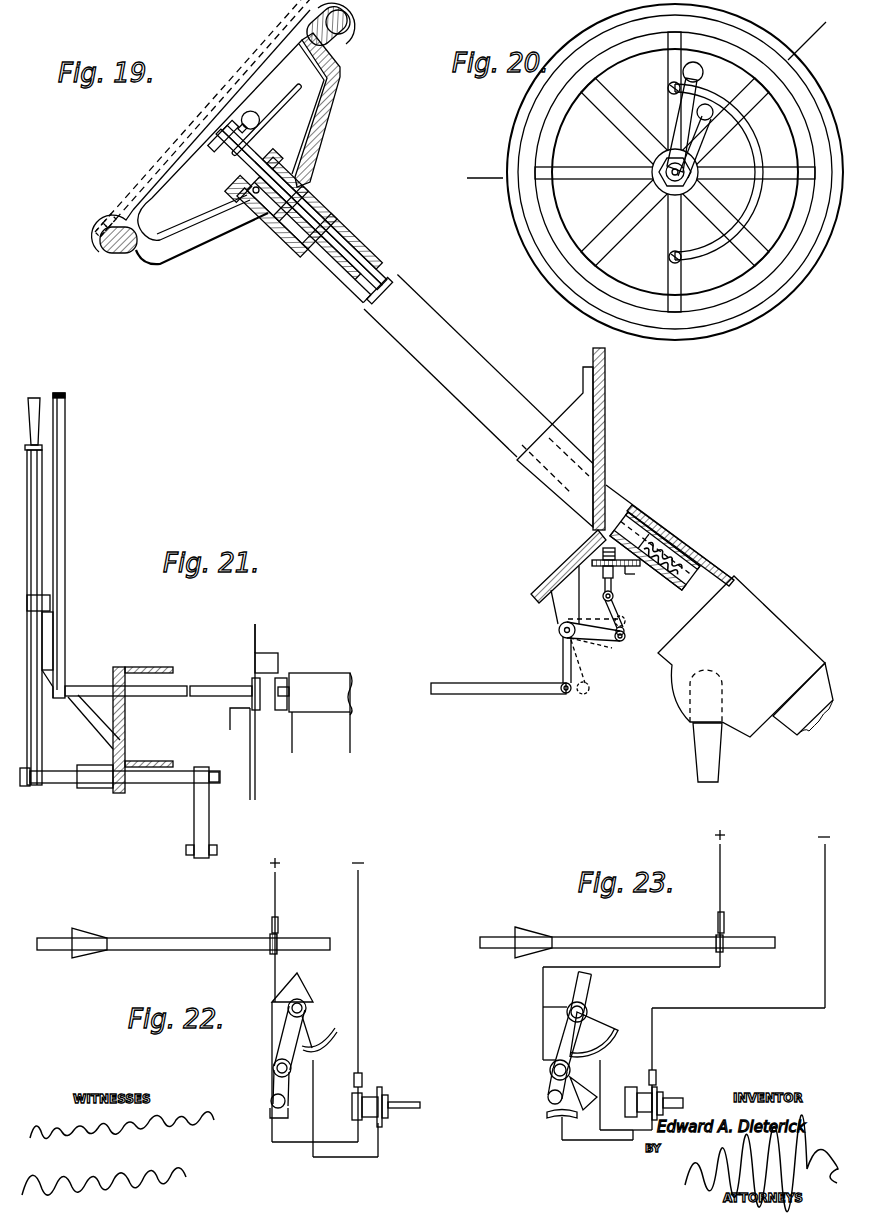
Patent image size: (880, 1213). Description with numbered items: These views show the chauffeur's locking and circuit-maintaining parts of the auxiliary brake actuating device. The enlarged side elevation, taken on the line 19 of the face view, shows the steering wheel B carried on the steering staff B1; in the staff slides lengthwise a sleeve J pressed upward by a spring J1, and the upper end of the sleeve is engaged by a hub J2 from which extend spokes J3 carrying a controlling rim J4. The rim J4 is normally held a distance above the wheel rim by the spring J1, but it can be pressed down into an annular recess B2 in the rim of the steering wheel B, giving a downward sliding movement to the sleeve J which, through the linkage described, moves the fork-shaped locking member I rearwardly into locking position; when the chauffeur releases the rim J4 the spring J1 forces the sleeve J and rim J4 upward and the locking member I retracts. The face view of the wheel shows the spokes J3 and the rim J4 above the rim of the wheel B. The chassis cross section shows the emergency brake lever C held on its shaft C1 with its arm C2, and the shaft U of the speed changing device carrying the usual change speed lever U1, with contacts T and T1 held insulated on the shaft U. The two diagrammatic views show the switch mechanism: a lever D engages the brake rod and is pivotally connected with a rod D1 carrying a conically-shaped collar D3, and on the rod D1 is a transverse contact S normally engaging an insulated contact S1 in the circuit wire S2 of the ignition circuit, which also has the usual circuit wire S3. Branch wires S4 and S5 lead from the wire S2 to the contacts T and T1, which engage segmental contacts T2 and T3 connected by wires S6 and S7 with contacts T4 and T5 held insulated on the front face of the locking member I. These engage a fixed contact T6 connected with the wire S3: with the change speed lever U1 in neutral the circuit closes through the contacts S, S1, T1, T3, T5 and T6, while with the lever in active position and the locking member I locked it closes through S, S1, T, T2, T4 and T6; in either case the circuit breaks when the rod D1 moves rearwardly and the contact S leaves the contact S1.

In FIG. 19, the steering wheel B is at (348, 18).
In FIG. 20, the steering wheel B is at (511, 208).
In FIG. 19, the steering staff B1 is at (478, 366).
In FIG. 19, the annular recess B2 is at (116, 252).
In FIG. 19, the sleeve J is at (652, 528).
In FIG. 20, the sleeve J is at (719, 172).
In FIG. 19, the spring J1 is at (688, 556).
In FIG. 19, the hub J2 is at (245, 190).
In FIG. 19, the spokes J3 is at (190, 232).
In FIG. 20, the spokes J3 is at (668, 67).
In FIG. 19, the rim J4 is at (106, 214).
In FIG. 20, the rim J4 is at (545, 240).
In FIG. 20, the section line 19— 19 is at (642, 96).
In FIG. 21, the emergency brake lever C is at (34, 498).
In FIG. 21, the shaft C1 is at (52, 784).
In FIG. 21, the arm C2 is at (195, 818).
In FIG. 21, the shaft of the speed changing device U is at (208, 690).
In FIG. 22, the shaft of the speed changing device U is at (306, 986).
In FIG. 23, the shaft of the speed changing device U is at (590, 983).
In FIG. 21, the change speed lever U1 is at (66, 596).
In FIG. 23, the lever D is at (642, 938).
In FIG. 22, the rod D1 is at (188, 938).
In FIG. 22, the conically-shaped collar D3 is at (96, 955).
In FIG. 23, the conically-shaped collar D3 is at (540, 935).
In FIG. 22, the contact S is at (268, 933).
In FIG. 23, the contact S is at (714, 928).
In FIG. 22, the contact S1 is at (279, 924).
In FIG. 23, the contact S1 is at (725, 922).
In FIG. 22, the circuit wire S2 is at (273, 886).
In FIG. 23, the circuit wire S2 is at (721, 869).
In FIG. 22, the circuit wire S3 is at (359, 899).
In FIG. 23, the circuit wire S3 is at (824, 898).
In FIG. 22, the branch wire S4 is at (273, 980).
In FIG. 23, the branch wire S4 is at (548, 1007).
In FIG. 22, the branch wire S5 is at (272, 1049).
In FIG. 23, the branch wire S5 is at (543, 1057).
In FIG. 22, the wire S6 is at (314, 1108).
In FIG. 23, the wire S6 is at (626, 1134).
In FIG. 22, the wire S7 is at (300, 1148).
In FIG. 23, the wire S7 is at (585, 1142).
In FIG. 22, the contact T is at (305, 1028).
In FIG. 23, the contact T is at (600, 1055).
In FIG. 19, the contact T1 is at (498, 688).
In FIG. 22, the contact T1 is at (268, 1103).
In FIG. 23, the contact T1 is at (548, 1109).
In FIG. 19, the segmental contact T2 is at (604, 642).
In FIG. 22, the segmental contact T2 is at (336, 1045).
In FIG. 23, the segmental contact T2 is at (620, 1038).
In FIG. 19, the segmental contact T3 is at (558, 612).
In FIG. 22, the segmental contact T3 is at (275, 1120).
In FIG. 23, the segmental contact T3 is at (556, 1120).
In FIG. 19, the contact T4 is at (622, 617).
In FIG. 22, the contact T4 is at (383, 1098).
In FIG. 23, the contact T4 is at (660, 1094).
In FIG. 19, the contact T5 is at (603, 592).
In FIG. 22, the contact T5 is at (362, 1114).
In FIG. 23, the contact T5 is at (626, 1096).
In FIG. 19, the contact T6 is at (622, 572).
In FIG. 22, the contact T6 is at (361, 1072).
In FIG. 23, the contact T6 is at (657, 1074).
In FIG. 22, the locking member I is at (360, 1094).